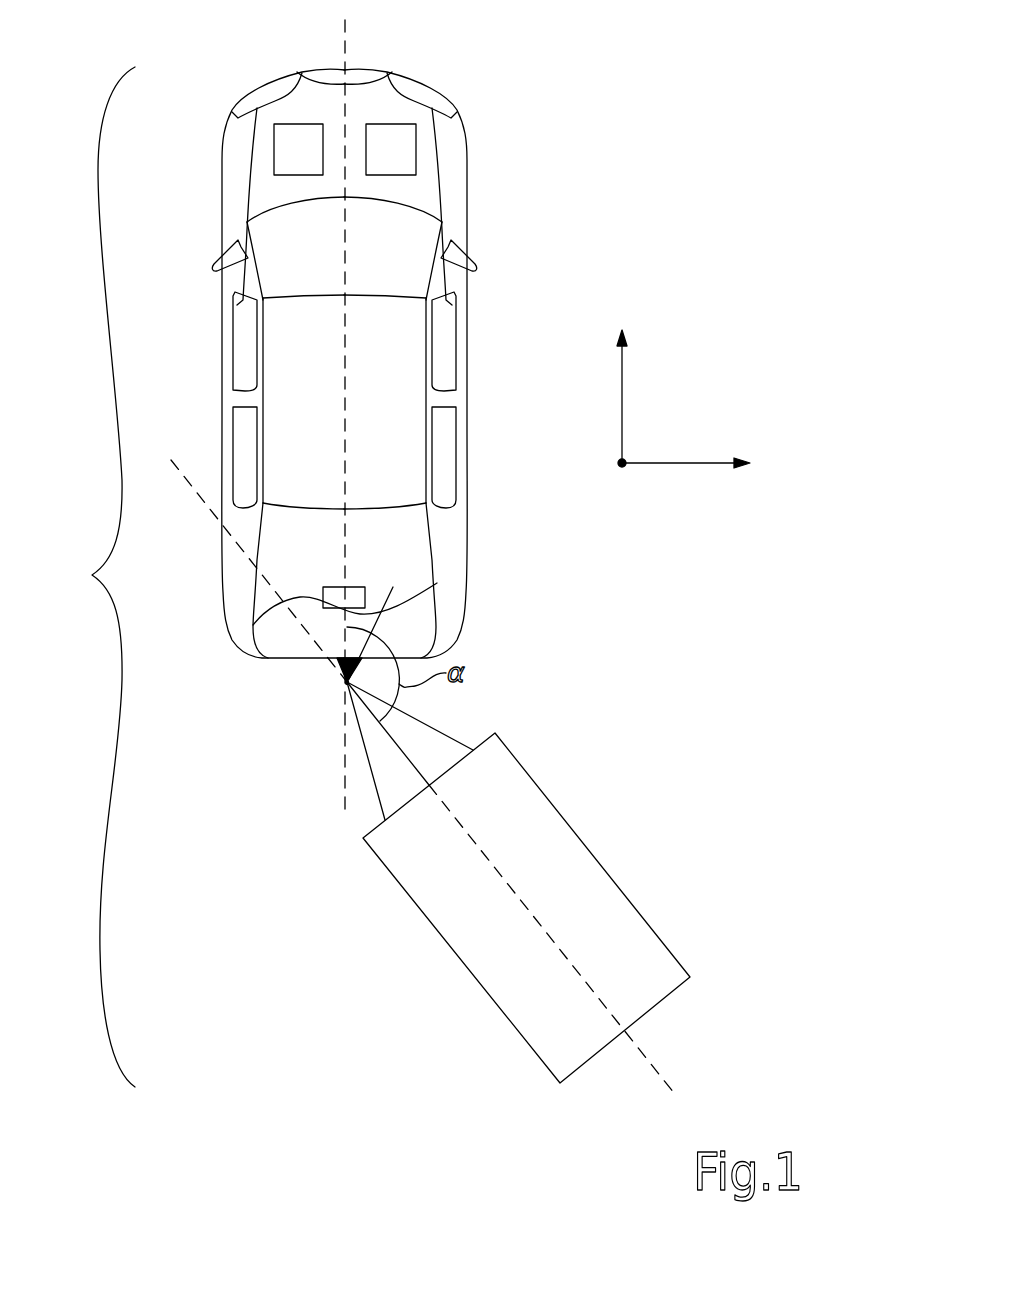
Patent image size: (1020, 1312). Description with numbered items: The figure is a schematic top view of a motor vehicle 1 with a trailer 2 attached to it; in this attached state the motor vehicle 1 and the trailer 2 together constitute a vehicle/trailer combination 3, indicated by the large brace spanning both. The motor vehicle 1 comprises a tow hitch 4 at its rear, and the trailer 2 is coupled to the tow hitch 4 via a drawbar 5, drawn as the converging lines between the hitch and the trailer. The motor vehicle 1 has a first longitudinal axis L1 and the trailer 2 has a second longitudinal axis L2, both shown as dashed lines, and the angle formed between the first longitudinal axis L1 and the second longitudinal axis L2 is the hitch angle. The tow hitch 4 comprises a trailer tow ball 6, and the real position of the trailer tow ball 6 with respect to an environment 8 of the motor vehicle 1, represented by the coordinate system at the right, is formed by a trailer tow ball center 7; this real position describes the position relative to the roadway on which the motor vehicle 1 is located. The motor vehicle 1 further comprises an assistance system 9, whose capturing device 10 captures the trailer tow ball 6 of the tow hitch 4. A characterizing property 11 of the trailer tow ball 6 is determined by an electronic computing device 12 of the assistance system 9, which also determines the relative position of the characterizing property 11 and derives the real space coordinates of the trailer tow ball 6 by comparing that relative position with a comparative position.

The motor vehicle 1 is at (467, 398).
The trailer 2 is at (605, 874).
The vehicle/trailer combination 3 is at (102, 577).
The tow hitch 4 is at (338, 669).
The drawbar 5 is at (368, 778).
The trailer tow ball 6 is at (344, 684).
The trailer tow ball center 7 is at (346, 686).
The environment 8 is at (554, 506).
The assistance system 9 is at (416, 150).
The capturing device 10 is at (253, 626).
The characterizing property 11 is at (383, 618).
The electronic computing device 12 is at (274, 150).
The first longitudinal axis L1 is at (348, 50).
The second longitudinal axis L2 is at (642, 1057).